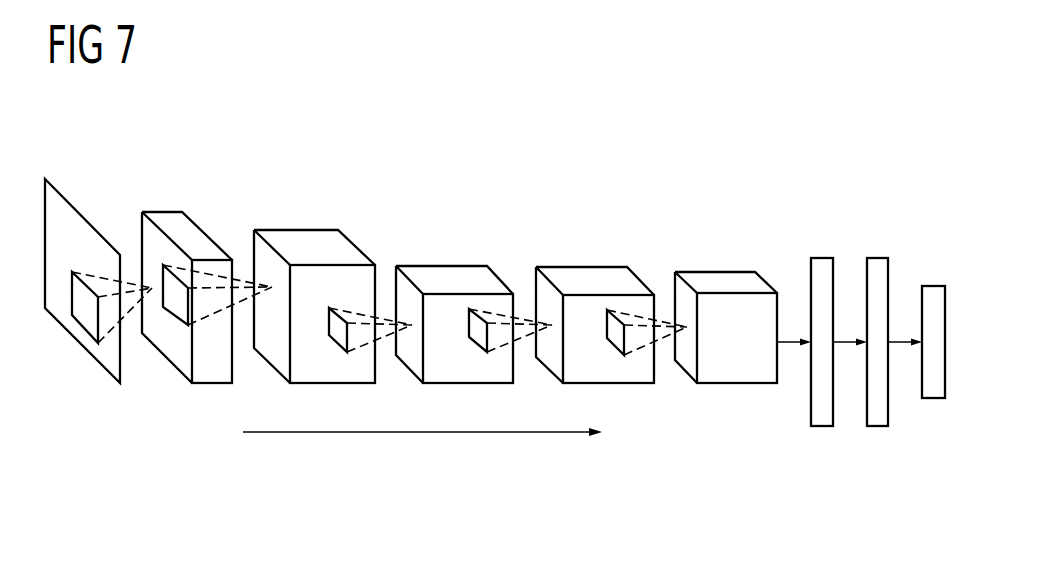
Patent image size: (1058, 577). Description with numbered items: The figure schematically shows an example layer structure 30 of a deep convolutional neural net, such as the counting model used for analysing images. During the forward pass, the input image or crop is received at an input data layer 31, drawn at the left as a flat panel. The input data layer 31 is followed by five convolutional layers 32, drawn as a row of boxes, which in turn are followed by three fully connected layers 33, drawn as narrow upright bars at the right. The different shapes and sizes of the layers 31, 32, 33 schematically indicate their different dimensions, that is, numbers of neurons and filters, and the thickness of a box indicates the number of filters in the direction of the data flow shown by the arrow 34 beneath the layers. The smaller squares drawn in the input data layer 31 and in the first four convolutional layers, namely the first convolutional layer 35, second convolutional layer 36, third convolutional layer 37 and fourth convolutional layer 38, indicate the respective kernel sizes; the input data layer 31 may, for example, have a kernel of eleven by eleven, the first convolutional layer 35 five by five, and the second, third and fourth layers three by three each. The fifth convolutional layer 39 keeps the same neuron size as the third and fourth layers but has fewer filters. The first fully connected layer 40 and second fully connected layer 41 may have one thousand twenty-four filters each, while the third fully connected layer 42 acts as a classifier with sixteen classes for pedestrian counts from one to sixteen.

The layer structure 30 is at (756, 120).
The input data layer 31 is at (68, 218).
The convolutional layers 32 is at (454, 258).
The fully connected layers 33 is at (869, 345).
The arrow 34 is at (433, 432).
The first convolutional layer 35 is at (170, 217).
The second convolutional layer 36 is at (310, 245).
The third convolutional layer 37 is at (453, 280).
The fourth convolutional layer 38 is at (593, 280).
The fifth convolutional layer 39 is at (727, 280).
The first fully connected layer 40 is at (820, 267).
The second fully connected layer 41 is at (876, 417).
The third fully connected layer 42 is at (935, 293).